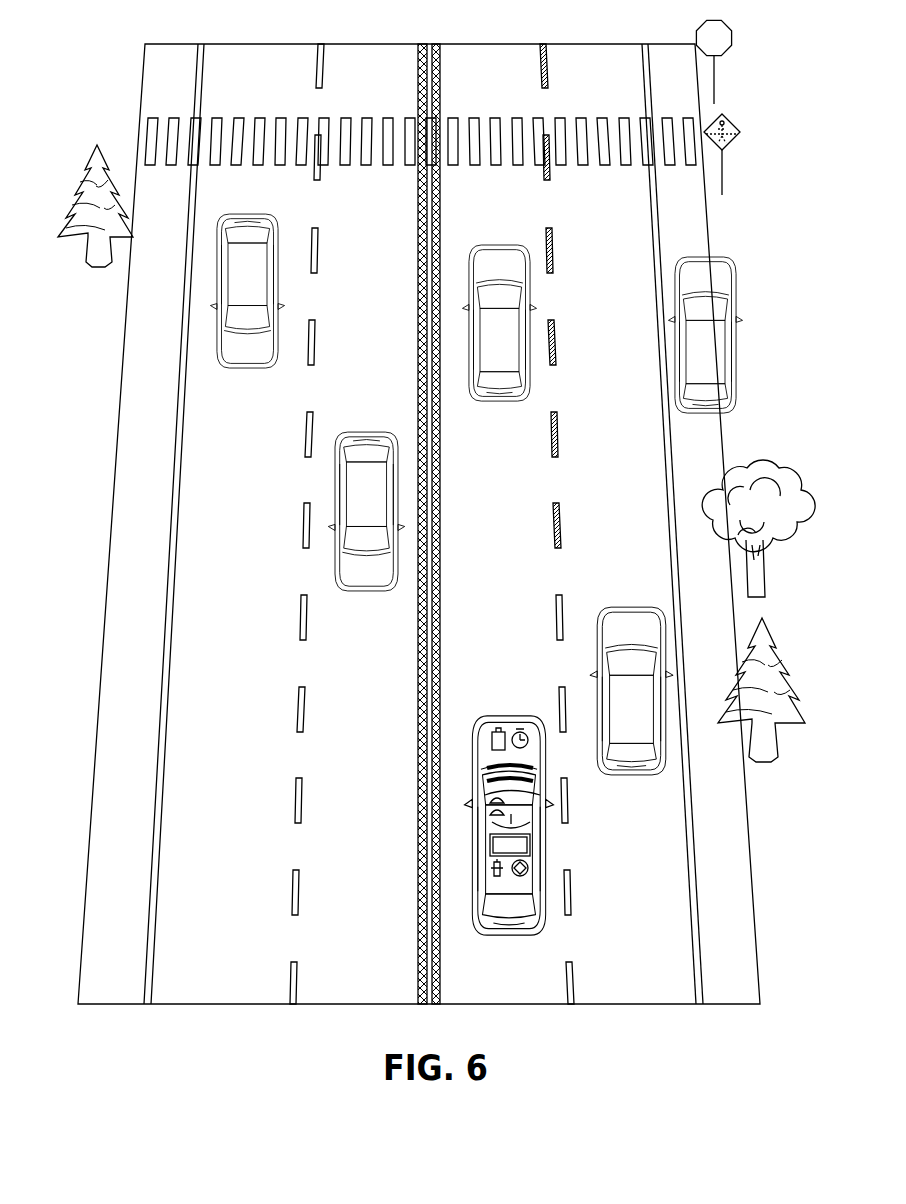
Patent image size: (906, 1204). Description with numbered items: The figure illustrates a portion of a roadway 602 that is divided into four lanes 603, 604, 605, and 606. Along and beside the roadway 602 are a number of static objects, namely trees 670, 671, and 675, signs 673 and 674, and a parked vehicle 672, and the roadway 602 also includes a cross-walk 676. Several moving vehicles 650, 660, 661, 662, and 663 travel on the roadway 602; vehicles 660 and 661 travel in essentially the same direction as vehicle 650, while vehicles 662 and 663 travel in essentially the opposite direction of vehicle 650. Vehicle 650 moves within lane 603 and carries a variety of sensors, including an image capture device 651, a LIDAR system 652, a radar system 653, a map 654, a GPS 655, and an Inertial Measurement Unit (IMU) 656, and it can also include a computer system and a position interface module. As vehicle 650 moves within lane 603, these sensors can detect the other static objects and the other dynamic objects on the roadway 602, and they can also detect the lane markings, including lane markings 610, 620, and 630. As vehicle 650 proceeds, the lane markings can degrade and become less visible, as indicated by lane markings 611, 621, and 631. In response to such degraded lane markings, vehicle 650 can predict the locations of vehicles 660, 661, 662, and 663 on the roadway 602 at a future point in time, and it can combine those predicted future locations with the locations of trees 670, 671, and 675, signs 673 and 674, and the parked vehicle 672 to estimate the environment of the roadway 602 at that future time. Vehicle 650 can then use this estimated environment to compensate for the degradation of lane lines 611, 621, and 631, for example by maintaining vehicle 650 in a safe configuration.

The roadway 602 is at (150, 449).
The lane 603 is at (516, 980).
The lane 604 is at (645, 980).
The lane 605 is at (348, 975).
The lane 606 is at (213, 975).
The lane marking 610 is at (441, 561).
The degraded lane marking 611 is at (441, 511).
The lane marking 620 is at (556, 600).
The degraded lane marking 621 is at (553, 528).
The lane marking 630 is at (666, 548).
The degraded lane marking 631 is at (662, 484).
The vehicle 650 is at (494, 833).
The image capture device 651 is at (494, 743).
The LIDAR system 652 is at (524, 735).
The radar system 653 is at (536, 822).
The map 654 is at (534, 850).
The GPS 655 is at (492, 872).
The Inertial Measurement Unit (IMU) 656 is at (534, 872).
The vehicle 660 is at (498, 405).
The vehicle 661 is at (637, 778).
The vehicle 662 is at (367, 436).
The vehicle 663 is at (247, 221).
The tree 670 is at (764, 765).
The tree 671 is at (761, 464).
The parked vehicle 672 is at (712, 346).
The sign 673 is at (739, 141).
The sign 674 is at (729, 54).
The tree 675 is at (90, 152).
The cross-walk 676 is at (148, 128).